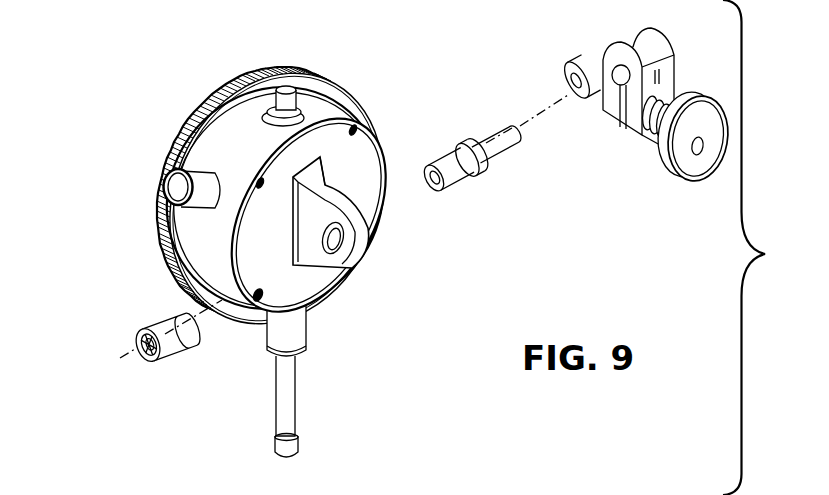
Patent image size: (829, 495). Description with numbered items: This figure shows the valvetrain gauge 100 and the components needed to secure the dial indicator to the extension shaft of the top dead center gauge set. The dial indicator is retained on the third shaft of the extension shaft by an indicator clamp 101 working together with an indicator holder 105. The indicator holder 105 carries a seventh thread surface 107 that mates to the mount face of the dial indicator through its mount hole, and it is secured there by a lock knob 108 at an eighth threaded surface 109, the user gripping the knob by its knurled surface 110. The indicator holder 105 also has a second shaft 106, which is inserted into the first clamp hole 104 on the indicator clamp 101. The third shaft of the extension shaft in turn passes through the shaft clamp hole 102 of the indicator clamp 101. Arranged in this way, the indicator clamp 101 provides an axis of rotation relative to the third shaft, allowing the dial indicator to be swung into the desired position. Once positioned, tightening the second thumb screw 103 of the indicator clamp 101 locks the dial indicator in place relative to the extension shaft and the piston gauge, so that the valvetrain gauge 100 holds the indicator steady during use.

The dial indicator 100 is at (92, 167).
The indicator clamp 101 is at (570, 143).
The shaft clamp hole 102 is at (618, 72).
The second thumb screw 103 is at (657, 153).
The first clamp hole 104 is at (572, 86).
The indicator holder 105 is at (472, 207).
The second shaft 106 is at (480, 138).
The seventh thread surface 107 is at (443, 158).
The lock knob 108 is at (158, 316).
The eighth threaded surface 109 is at (148, 352).
The knurled surface 110 is at (175, 350).